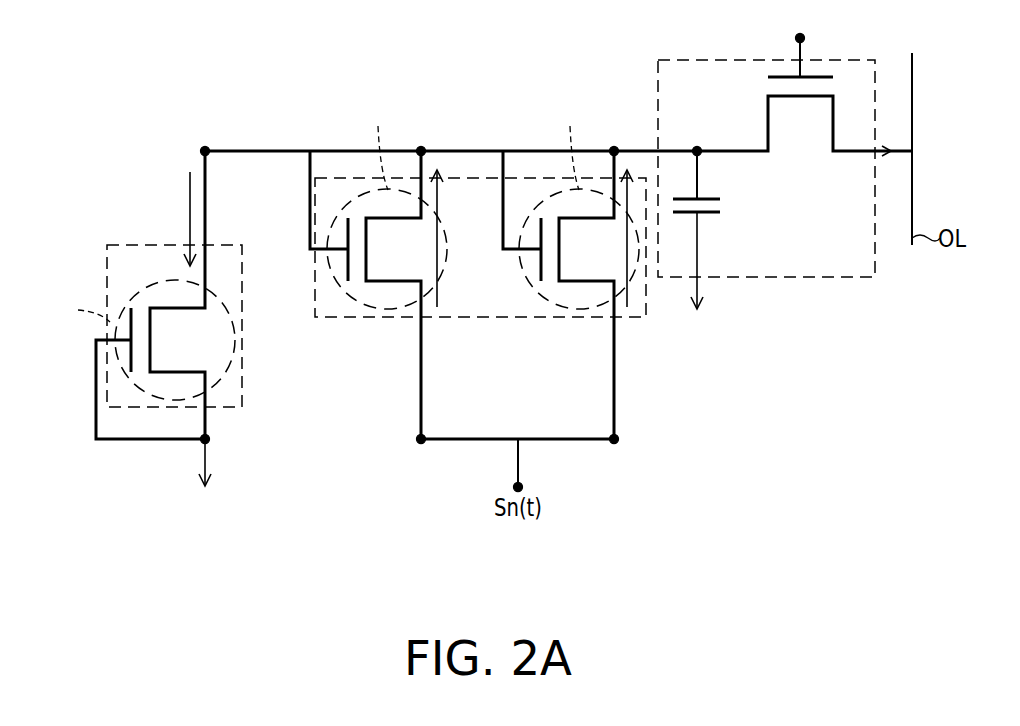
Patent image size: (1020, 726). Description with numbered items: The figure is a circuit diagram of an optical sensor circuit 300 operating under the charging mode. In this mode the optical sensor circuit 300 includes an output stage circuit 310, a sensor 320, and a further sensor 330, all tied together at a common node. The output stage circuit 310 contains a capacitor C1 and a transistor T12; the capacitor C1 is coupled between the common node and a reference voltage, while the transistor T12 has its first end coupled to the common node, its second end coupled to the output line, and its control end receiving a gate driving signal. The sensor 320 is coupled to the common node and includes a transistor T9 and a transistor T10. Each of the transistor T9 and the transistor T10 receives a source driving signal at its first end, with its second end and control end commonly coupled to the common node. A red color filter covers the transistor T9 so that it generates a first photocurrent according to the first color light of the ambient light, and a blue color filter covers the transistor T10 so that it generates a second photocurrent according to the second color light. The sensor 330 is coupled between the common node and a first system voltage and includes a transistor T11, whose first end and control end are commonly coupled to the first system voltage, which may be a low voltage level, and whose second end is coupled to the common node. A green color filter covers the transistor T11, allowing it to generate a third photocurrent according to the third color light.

The optical sensor circuit 300 is at (876, 563).
The output stage circuit 310 is at (784, 173).
The sensor 320 is at (478, 269).
The sensor 330 is at (139, 338).
The transistor T9 is at (378, 295).
The transistor T10 is at (571, 295).
The transistor T11 is at (78, 262).
The transistor T12 is at (558, 95).
The capacitor C1 is at (710, 230).